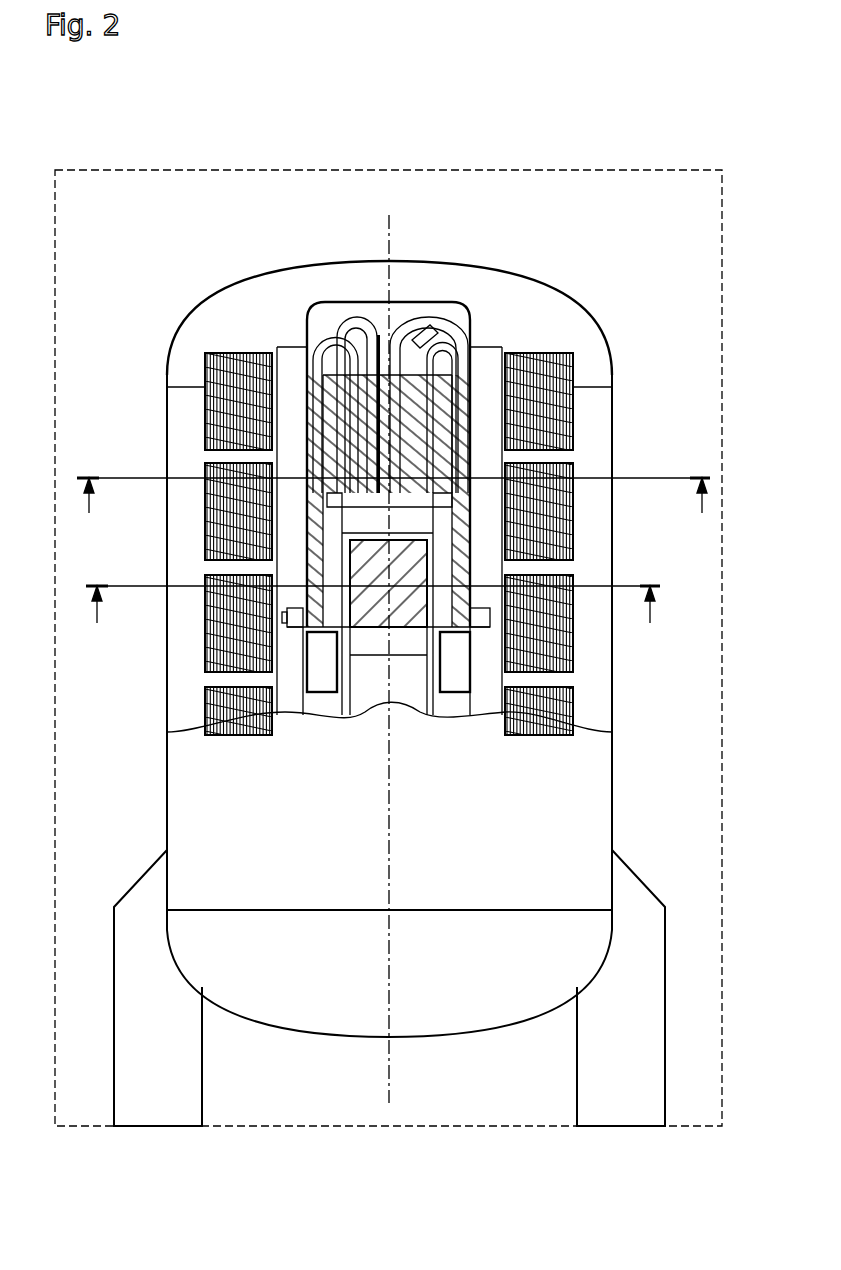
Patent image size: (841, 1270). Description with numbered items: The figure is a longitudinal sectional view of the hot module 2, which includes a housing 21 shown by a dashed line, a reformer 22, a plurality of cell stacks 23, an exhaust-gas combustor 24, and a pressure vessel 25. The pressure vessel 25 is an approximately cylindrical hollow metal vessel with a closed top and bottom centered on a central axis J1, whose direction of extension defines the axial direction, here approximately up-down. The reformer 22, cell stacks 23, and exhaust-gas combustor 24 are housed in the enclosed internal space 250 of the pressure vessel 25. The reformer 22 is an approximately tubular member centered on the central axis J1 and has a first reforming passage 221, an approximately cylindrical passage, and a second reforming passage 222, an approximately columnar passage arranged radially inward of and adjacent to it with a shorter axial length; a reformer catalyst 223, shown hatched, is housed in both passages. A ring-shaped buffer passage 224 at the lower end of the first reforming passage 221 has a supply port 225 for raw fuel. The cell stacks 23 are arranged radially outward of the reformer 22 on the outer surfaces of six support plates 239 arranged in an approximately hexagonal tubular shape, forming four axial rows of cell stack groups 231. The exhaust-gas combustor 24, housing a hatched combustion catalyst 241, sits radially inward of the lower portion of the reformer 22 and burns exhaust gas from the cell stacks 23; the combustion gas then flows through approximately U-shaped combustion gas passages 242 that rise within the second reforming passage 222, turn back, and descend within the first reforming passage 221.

The hot module 2 is at (48, 142).
The housing 21 is at (661, 166).
The reformer 22 is at (374, 406).
The first reforming passage 221 is at (304, 411).
The second reforming passage 222 is at (337, 405).
The reformer catalyst 223 is at (447, 428).
The buffer passage 224 is at (300, 627).
The supply port 225 is at (285, 624).
The cell stack 23 is at (203, 417).
The cell stack group 231 is at (668, 424).
The support plate 239 is at (285, 345).
The exhaust-gas combustor 24 is at (385, 663).
The combustion catalyst 241 is at (400, 602).
The combustion gas passage 242 is at (332, 333).
The pressure vessel 25 is at (389, 674).
The internal space 250 is at (530, 310).
The central axis J1 is at (393, 237).